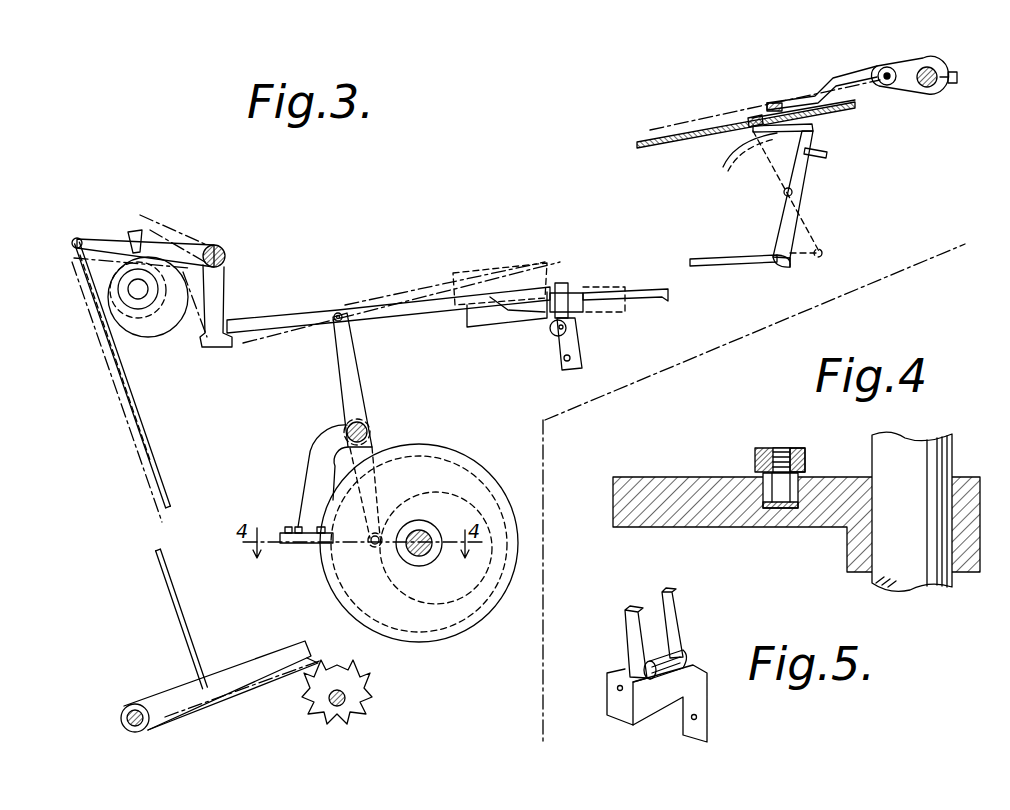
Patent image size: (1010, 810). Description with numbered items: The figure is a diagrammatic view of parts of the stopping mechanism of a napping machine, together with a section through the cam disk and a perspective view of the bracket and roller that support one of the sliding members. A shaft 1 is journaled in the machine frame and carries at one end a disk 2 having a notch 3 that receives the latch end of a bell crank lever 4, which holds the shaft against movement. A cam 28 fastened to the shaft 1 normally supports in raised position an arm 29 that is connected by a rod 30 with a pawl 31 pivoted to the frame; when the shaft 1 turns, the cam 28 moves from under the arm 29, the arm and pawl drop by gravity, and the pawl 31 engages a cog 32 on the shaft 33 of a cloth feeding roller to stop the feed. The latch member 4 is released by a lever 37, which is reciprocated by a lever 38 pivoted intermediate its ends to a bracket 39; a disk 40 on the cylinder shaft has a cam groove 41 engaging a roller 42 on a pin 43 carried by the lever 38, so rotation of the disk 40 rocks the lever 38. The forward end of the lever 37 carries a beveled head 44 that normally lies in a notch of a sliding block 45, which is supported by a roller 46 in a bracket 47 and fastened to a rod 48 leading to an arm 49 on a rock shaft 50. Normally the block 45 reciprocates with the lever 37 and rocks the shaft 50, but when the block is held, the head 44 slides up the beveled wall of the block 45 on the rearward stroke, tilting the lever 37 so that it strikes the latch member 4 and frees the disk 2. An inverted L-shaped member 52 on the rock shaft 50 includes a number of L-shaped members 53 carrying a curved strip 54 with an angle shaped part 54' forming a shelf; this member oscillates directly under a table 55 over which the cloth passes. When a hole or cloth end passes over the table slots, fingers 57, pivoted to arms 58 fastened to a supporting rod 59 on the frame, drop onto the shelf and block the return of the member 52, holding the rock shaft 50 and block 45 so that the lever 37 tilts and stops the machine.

In FIG. 3, the shaft 1 is at (138, 292).
In FIG. 3, the disk 2 is at (160, 323).
In FIG. 3, the notch 3 is at (137, 247).
In FIG. 3, the bell crank lever 4 is at (188, 238).
In FIG. 3, the cam 28 is at (118, 276).
In FIG. 3, the arm 29 is at (148, 239).
In FIG. 3, the rod 30 is at (173, 602).
In FIG. 3, the pawl 31 is at (243, 668).
In FIG. 3, the cog 32 is at (358, 717).
In FIG. 3, the shaft 33 is at (345, 697).
In FIG. 3, the lever 37 is at (398, 303).
In FIG. 3, the lever 38 is at (355, 388).
In FIG. 4, the lever 38 is at (767, 448).
In FIG. 3, the bracket 39 is at (313, 463).
In FIG. 3, the disk 40 is at (453, 462).
In FIG. 4, the disk 40 is at (723, 477).
In FIG. 3, the cam groove 41 is at (482, 495).
In FIG. 4, the cam groove 41 is at (783, 505).
In FIG. 4, the roller 42 is at (798, 492).
In FIG. 4, the pin 43 is at (807, 457).
In FIG. 3, the head 44 is at (530, 302).
In FIG. 3, the sliding block 45 is at (490, 318).
In FIG. 3, the roller 46 is at (553, 333).
In FIG. 5, the roller 46 is at (642, 657).
In FIG. 3, the bracket 47 is at (577, 343).
In FIG. 5, the bracket 47 is at (678, 630).
In FIG. 3, the rod 48 is at (667, 302).
In FIG. 3, the arm 49 is at (780, 220).
In FIG. 3, the rock shaft 50 is at (793, 192).
In FIG. 3, the inverted L-shaped member 52 is at (772, 102).
In FIG. 3, the L-shaped members 53 is at (762, 147).
In FIG. 3, the strip 54 is at (740, 104).
In FIG. 3, the angle shaped part 54' is at (838, 146).
In FIG. 3, the table 55 is at (713, 132).
In FIG. 3, the fingers 57 is at (823, 90).
In FIG. 3, the arms 58 is at (913, 50).
In FIG. 3, the supporting rod 59 is at (932, 85).